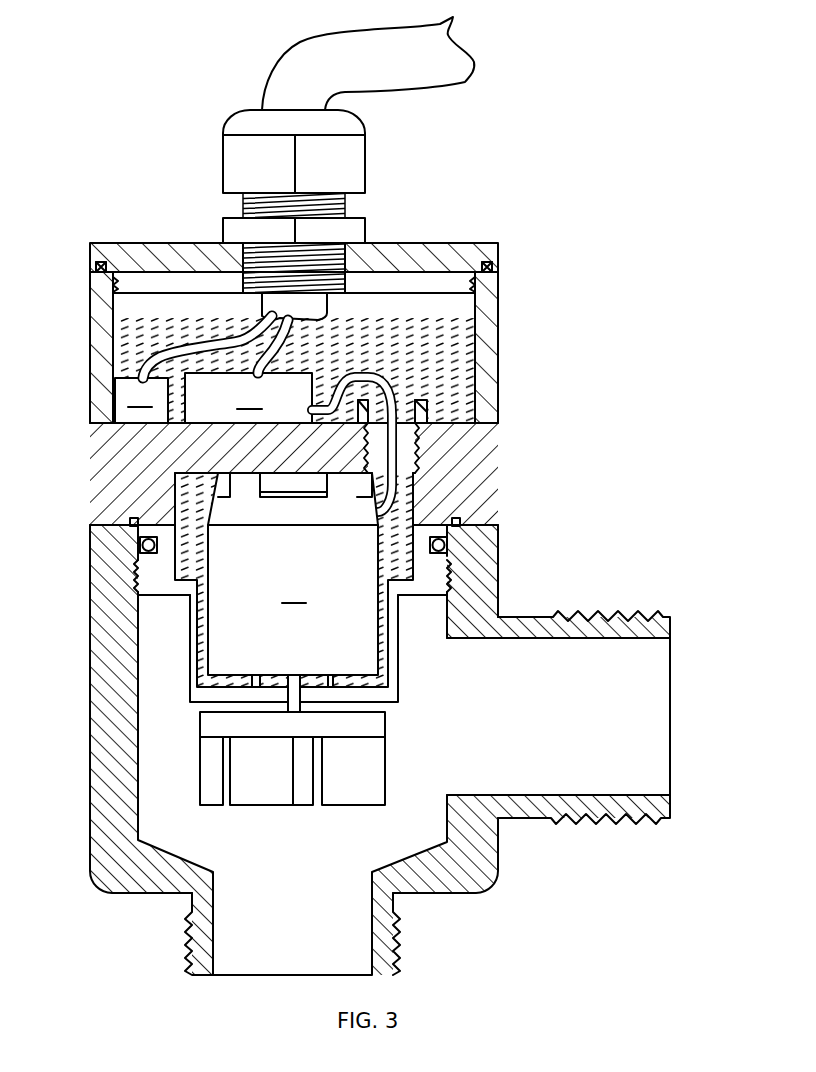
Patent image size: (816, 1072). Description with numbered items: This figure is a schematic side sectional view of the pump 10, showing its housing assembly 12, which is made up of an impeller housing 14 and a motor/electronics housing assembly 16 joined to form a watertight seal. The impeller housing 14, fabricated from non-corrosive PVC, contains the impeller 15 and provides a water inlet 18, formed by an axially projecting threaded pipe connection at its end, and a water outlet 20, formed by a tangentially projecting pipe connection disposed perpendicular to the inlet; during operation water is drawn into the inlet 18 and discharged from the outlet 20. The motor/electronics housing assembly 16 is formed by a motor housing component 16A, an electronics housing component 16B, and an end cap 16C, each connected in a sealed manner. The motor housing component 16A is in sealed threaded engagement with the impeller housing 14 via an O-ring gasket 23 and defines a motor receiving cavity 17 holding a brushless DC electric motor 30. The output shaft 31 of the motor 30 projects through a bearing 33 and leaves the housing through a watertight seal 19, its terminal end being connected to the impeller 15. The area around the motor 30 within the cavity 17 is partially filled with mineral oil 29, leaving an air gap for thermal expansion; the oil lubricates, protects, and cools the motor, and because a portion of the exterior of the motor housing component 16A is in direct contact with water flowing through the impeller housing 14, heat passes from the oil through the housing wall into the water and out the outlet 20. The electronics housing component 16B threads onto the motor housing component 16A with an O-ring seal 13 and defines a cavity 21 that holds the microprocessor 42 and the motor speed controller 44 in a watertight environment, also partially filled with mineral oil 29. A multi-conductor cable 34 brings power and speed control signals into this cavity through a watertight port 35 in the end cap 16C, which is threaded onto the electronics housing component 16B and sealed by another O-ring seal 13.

The pump 10 is at (577, 179).
The housing assembly 12 is at (505, 487).
The O-ring seal 13 is at (95, 262).
The impeller housing 14 is at (87, 888).
The impeller 15 is at (378, 758).
The motor/electronics housing assembly 16 is at (502, 334).
The motor housing component 16A is at (433, 580).
The electronics housing component 16B is at (497, 393).
The end cap 16C is at (500, 258).
The motor receiving cavity 17 is at (186, 488).
The water inlet 18 is at (190, 945).
The watertight seal 19 is at (307, 693).
The water outlet 20 is at (631, 614).
The cavity 21 is at (135, 309).
The O-ring gasket 23 is at (443, 543).
The mineral oil 29 is at (130, 343).
The electric motor 30 is at (293, 574).
The output shaft 31 is at (292, 712).
The bearing 33 is at (318, 680).
The multi-conductor cable 34 is at (433, 80).
The watertight port 35 is at (345, 205).
The microprocessor 42 is at (141, 400).
The motor speed controller 44 is at (248, 398).